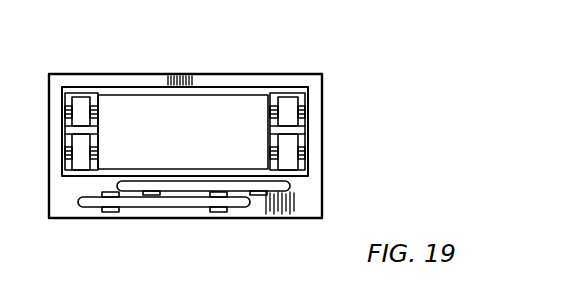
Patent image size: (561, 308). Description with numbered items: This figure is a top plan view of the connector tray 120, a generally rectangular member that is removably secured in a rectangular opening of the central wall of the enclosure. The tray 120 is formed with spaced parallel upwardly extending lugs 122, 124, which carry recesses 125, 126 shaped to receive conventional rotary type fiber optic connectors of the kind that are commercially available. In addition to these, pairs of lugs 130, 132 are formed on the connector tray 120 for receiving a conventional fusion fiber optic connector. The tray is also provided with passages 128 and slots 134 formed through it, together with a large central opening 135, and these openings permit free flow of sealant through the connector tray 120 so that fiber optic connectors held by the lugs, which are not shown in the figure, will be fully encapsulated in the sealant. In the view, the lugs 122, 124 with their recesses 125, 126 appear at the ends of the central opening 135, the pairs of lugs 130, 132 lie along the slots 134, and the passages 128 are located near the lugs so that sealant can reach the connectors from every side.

The connector tray 120 is at (315, 73).
The lug 122 is at (305, 131).
The lug 124 is at (279, 130).
The recess 125 is at (305, 109).
The recess 126 is at (270, 112).
The passage 128 is at (289, 110).
The lug 130 is at (227, 192).
The lug 132 is at (115, 214).
The slot 134 is at (152, 205).
The central opening 135 is at (140, 116).